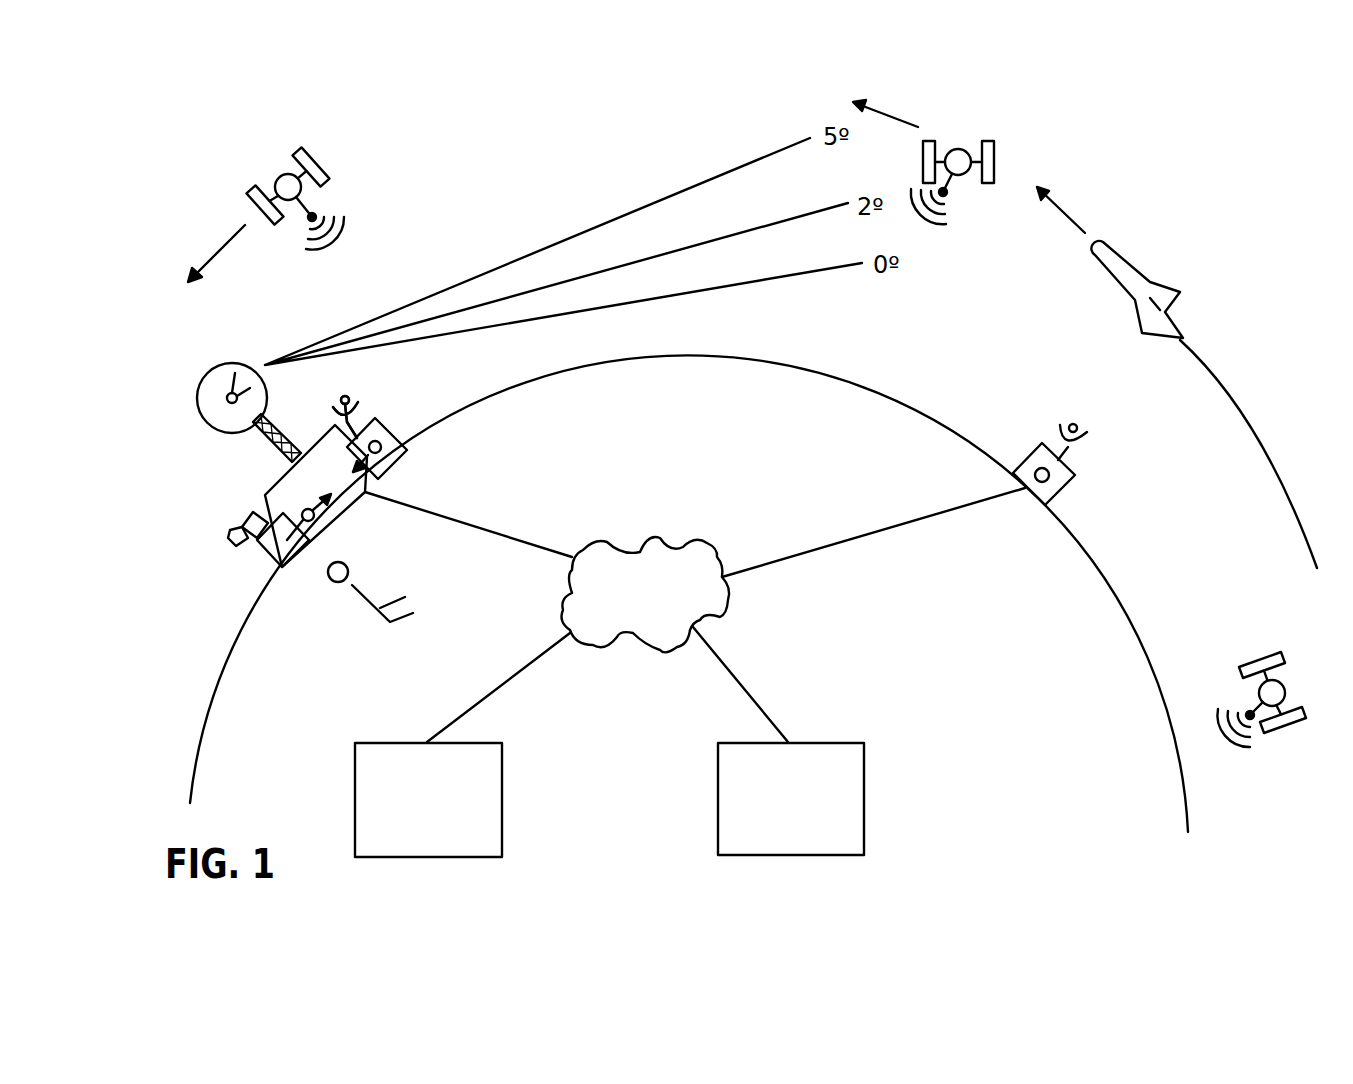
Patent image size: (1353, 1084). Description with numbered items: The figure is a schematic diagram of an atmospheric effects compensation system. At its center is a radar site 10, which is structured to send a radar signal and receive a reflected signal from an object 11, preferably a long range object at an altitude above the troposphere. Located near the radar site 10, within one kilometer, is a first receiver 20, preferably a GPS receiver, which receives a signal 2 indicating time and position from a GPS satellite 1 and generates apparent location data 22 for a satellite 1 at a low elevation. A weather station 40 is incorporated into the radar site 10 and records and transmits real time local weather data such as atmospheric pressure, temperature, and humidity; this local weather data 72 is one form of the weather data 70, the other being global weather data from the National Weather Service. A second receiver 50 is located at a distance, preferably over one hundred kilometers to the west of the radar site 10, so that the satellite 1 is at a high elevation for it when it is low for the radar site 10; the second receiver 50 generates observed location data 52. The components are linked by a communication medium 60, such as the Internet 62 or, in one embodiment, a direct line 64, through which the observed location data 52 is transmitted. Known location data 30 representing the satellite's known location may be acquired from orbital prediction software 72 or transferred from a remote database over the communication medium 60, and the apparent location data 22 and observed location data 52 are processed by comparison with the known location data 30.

The GPS satellite 1 is at (276, 182).
The signal 2 is at (349, 199).
The radar site 10 is at (268, 496).
The object 11 is at (1122, 262).
The first receiver 20 is at (393, 436).
The apparent location data 22 is at (382, 452).
The known location data 30 is at (815, 745).
The weather station 40 is at (282, 550).
The second receiver 50 is at (1070, 472).
The observed location data 52 is at (1030, 460).
The communication medium 60 is at (688, 578).
The Internet 62 is at (650, 545).
The direct line 64 is at (338, 582).
The weather data 70 is at (482, 742).
The orbital prediction software 72 is at (304, 508).